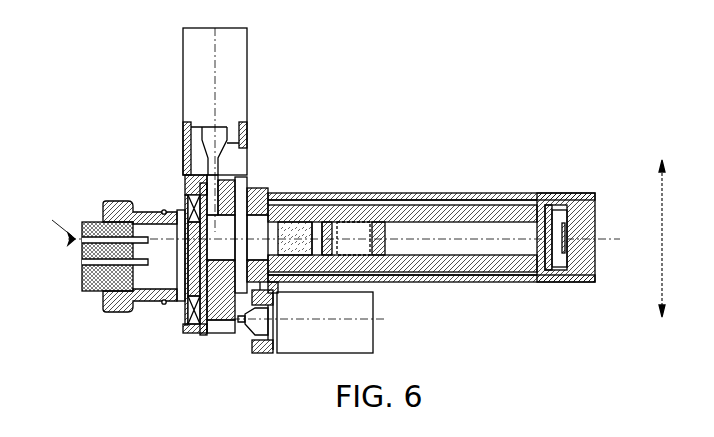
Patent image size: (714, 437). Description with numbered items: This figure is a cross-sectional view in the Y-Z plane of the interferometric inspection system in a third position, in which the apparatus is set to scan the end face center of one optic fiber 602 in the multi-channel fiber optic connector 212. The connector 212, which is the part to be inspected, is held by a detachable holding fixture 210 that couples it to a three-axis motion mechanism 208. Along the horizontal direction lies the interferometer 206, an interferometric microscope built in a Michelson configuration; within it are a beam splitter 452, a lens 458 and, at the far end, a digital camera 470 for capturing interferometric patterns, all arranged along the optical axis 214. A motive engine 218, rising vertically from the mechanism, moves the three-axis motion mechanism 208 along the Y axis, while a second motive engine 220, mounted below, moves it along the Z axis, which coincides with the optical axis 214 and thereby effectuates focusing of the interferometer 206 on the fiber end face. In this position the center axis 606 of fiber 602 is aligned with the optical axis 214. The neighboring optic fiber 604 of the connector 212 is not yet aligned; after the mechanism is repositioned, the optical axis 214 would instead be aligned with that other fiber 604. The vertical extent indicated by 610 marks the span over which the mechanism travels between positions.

The optic fiber 602 is at (92, 222).
The optic fiber 604 is at (106, 304).
The center axis 606 is at (51, 223).
The multi-channel fiber optic connector 212 is at (118, 210).
The 3-axis motion mechanism 208 is at (196, 190).
The holding fixture 210 is at (178, 306).
The optical axis 214 is at (220, 237).
The motive engine 218 is at (233, 99).
The interferometer 206 is at (420, 198).
The beam splitter 452 is at (305, 228).
The lens 458 is at (352, 237).
The digital camera 470 is at (578, 210).
The motive engine 220 is at (360, 338).
The dimension / travel range 610 is at (657, 213).